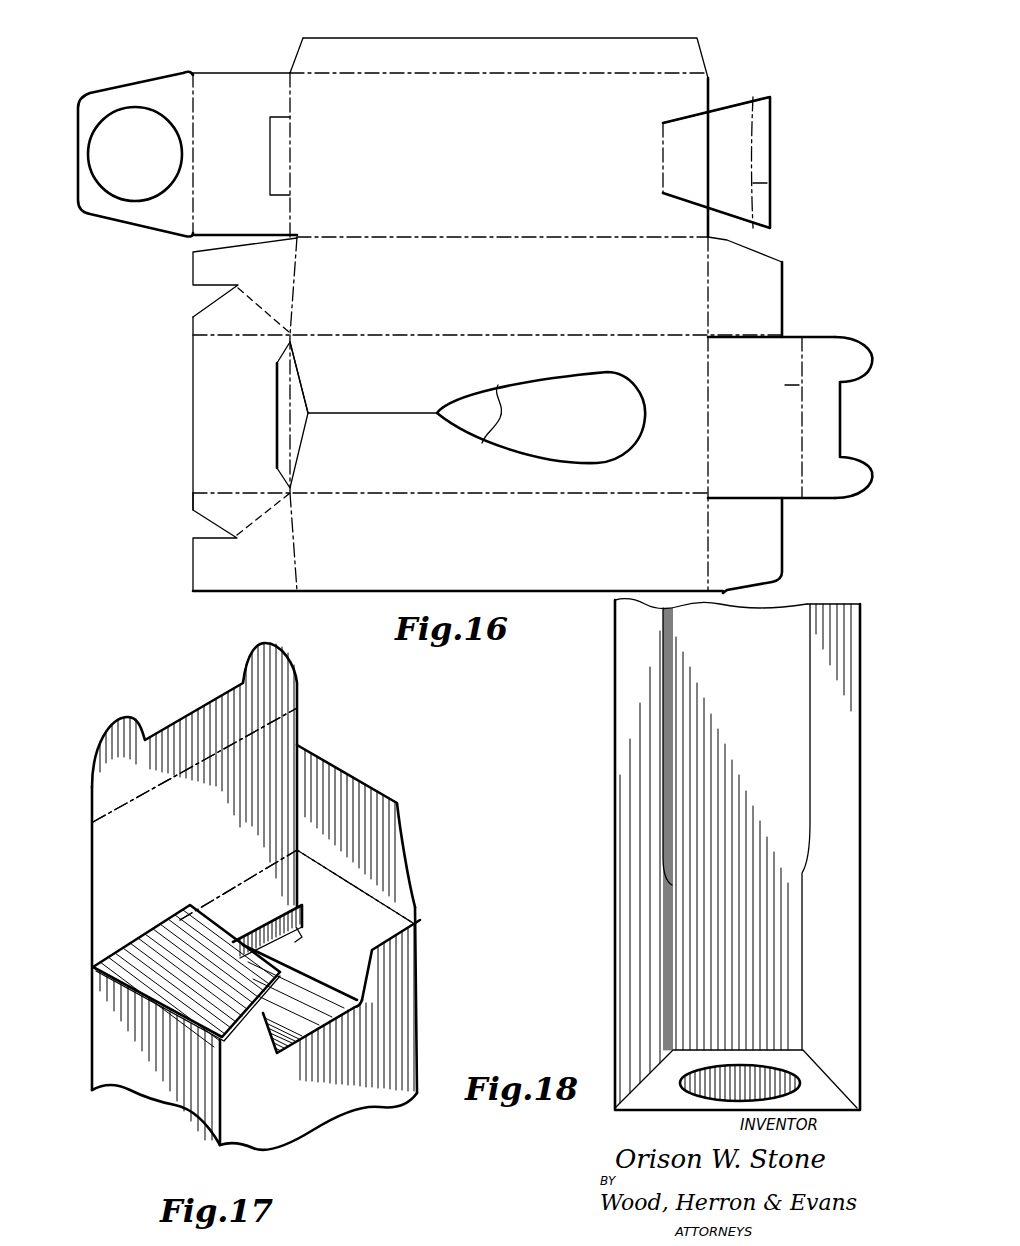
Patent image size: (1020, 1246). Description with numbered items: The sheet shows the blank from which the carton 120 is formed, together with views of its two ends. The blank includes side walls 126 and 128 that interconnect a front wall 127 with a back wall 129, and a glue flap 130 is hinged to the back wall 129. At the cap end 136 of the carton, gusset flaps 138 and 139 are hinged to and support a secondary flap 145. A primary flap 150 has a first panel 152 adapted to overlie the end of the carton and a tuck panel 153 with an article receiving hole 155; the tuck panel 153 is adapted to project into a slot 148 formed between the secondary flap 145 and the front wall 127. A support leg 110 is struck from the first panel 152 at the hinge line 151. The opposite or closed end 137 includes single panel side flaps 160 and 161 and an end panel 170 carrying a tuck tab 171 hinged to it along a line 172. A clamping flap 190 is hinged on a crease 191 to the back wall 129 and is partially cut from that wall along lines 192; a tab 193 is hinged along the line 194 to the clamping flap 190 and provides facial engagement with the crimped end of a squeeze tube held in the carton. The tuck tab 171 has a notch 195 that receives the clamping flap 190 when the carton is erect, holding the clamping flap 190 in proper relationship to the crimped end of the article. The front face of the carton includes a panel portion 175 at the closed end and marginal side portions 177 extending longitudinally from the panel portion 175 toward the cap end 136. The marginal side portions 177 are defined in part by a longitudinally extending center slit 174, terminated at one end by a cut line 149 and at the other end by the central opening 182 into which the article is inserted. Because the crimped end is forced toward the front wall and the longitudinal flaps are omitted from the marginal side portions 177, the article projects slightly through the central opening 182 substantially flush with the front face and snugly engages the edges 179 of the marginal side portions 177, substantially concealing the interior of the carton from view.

In FIG. 16, the support leg 110 is at (278, 163).
In FIG. 18, the carton 120 is at (612, 723).
In FIG. 16, the side wall 126 is at (458, 568).
In FIG. 17, the side wall 126 is at (145, 1095).
In FIG. 16, the front wall 127 is at (450, 420).
In FIG. 16, the side wall 128 is at (487, 308).
In FIG. 17, the side wall 128 is at (413, 911).
In FIG. 16, the back wall 129 is at (502, 157).
In FIG. 17, the back wall 129 is at (398, 1063).
In FIG. 18, the back wall 129 is at (732, 843).
In FIG. 16, the glue flap 130 is at (499, 58).
In FIG. 16, the cap end 136 is at (172, 398).
In FIG. 16, the closed end 137 is at (812, 263).
In FIG. 16, the gusset flap 138 is at (250, 578).
In FIG. 16, the gusset flap 139 is at (273, 278).
In FIG. 16, the secondary flap 145 is at (247, 414).
In FIG. 16, the slot 148 is at (298, 438).
In FIG. 16, the cut line 149 is at (308, 407).
In FIG. 16, the primary flap 150 is at (226, 58).
In FIG. 16, the hinge line 151 is at (292, 184).
In FIG. 16, the first panel 152 is at (245, 154).
In FIG. 16, the tuck panel 153 is at (116, 212).
In FIG. 18, the tuck panel 153 is at (793, 1061).
In FIG. 16, the article receiving hole 155 is at (152, 191).
In FIG. 18, the article receiving hole 155 is at (795, 1083).
In FIG. 16, the side flap 160 is at (751, 545).
In FIG. 17, the side flap 160 is at (186, 976).
In FIG. 16, the side flap 161 is at (748, 299).
In FIG. 17, the side flap 161 is at (352, 776).
In FIG. 16, the end panel 170 is at (771, 417).
In FIG. 16, the tuck tab 171 is at (832, 426).
In FIG. 17, the tuck tab 171 is at (268, 692).
In FIG. 16, the line 172 is at (790, 386).
In FIG. 17, the line 172 is at (262, 728).
In FIG. 16, the center slit 174 is at (405, 416).
In FIG. 16, the panel portion 175 is at (672, 421).
In FIG. 17, the panel portion 175 is at (227, 913).
In FIG. 16, the marginal side portions 177 is at (403, 429).
In FIG. 18, the marginal side portions 177 is at (600, 880).
In FIG. 16, the edges 179 is at (506, 414).
In FIG. 16, the central opening 182 is at (597, 393).
In FIG. 18, the central opening 182 is at (798, 751).
In FIG. 16, the clamping flap 190 is at (745, 98).
In FIG. 17, the clamping flap 190 is at (310, 973).
In FIG. 16, the crease 191 is at (663, 157).
In FIG. 16, the lines 192 is at (683, 117).
In FIG. 17, the lines 192 is at (375, 969).
In FIG. 16, the tab 193 is at (768, 154).
In FIG. 17, the tab 193 is at (295, 921).
In FIG. 16, the line 194 is at (770, 183).
In FIG. 17, the line 194 is at (307, 943).
In FIG. 16, the notch 195 is at (857, 383).
In FIG. 17, the notch 195 is at (200, 698).